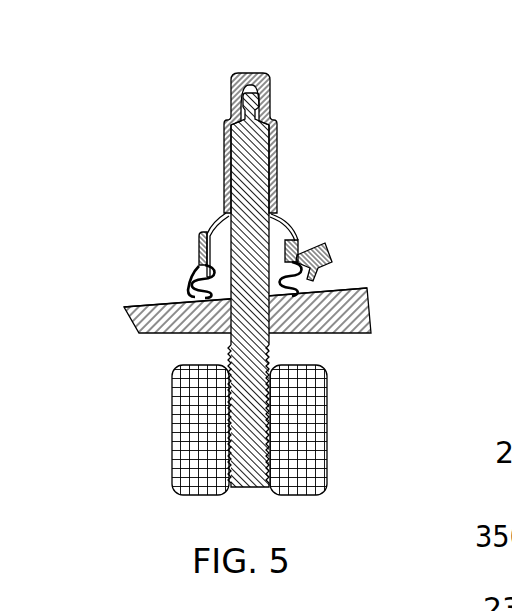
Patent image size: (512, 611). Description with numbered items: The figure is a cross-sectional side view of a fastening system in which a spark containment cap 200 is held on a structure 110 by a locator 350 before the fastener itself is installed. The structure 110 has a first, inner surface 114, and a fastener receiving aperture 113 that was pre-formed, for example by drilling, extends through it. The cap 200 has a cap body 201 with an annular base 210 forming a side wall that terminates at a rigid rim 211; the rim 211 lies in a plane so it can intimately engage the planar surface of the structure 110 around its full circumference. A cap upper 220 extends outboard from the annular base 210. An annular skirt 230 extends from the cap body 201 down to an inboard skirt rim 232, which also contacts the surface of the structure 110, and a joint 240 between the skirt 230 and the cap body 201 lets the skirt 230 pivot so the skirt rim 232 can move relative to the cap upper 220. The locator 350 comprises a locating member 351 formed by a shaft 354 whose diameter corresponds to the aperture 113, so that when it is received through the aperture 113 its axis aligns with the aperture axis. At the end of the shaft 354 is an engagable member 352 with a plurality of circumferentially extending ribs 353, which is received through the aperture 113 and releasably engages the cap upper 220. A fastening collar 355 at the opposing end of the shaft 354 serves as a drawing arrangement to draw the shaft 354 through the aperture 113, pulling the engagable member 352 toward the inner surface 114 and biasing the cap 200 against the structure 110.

The cap 200 is at (168, 80).
The cap body 201 is at (438, 104).
The cap upper 220 is at (223, 128).
The locator 350 is at (241, 172).
The locating member 351 is at (258, 178).
The engagable member 352 is at (258, 97).
The circumferentially extending ribs 353 is at (262, 110).
The shaft 354 is at (255, 237).
The joint 240 is at (180, 242).
The annular skirt 230 is at (192, 292).
The annular base 210 is at (290, 250).
The skirt rim 232 is at (303, 288).
The rim 211 is at (290, 297).
The structure 110 is at (367, 315).
The fastener receiving aperture 113 is at (228, 313).
The inner surface 114 is at (358, 282).
The fastening collar 355 is at (313, 422).